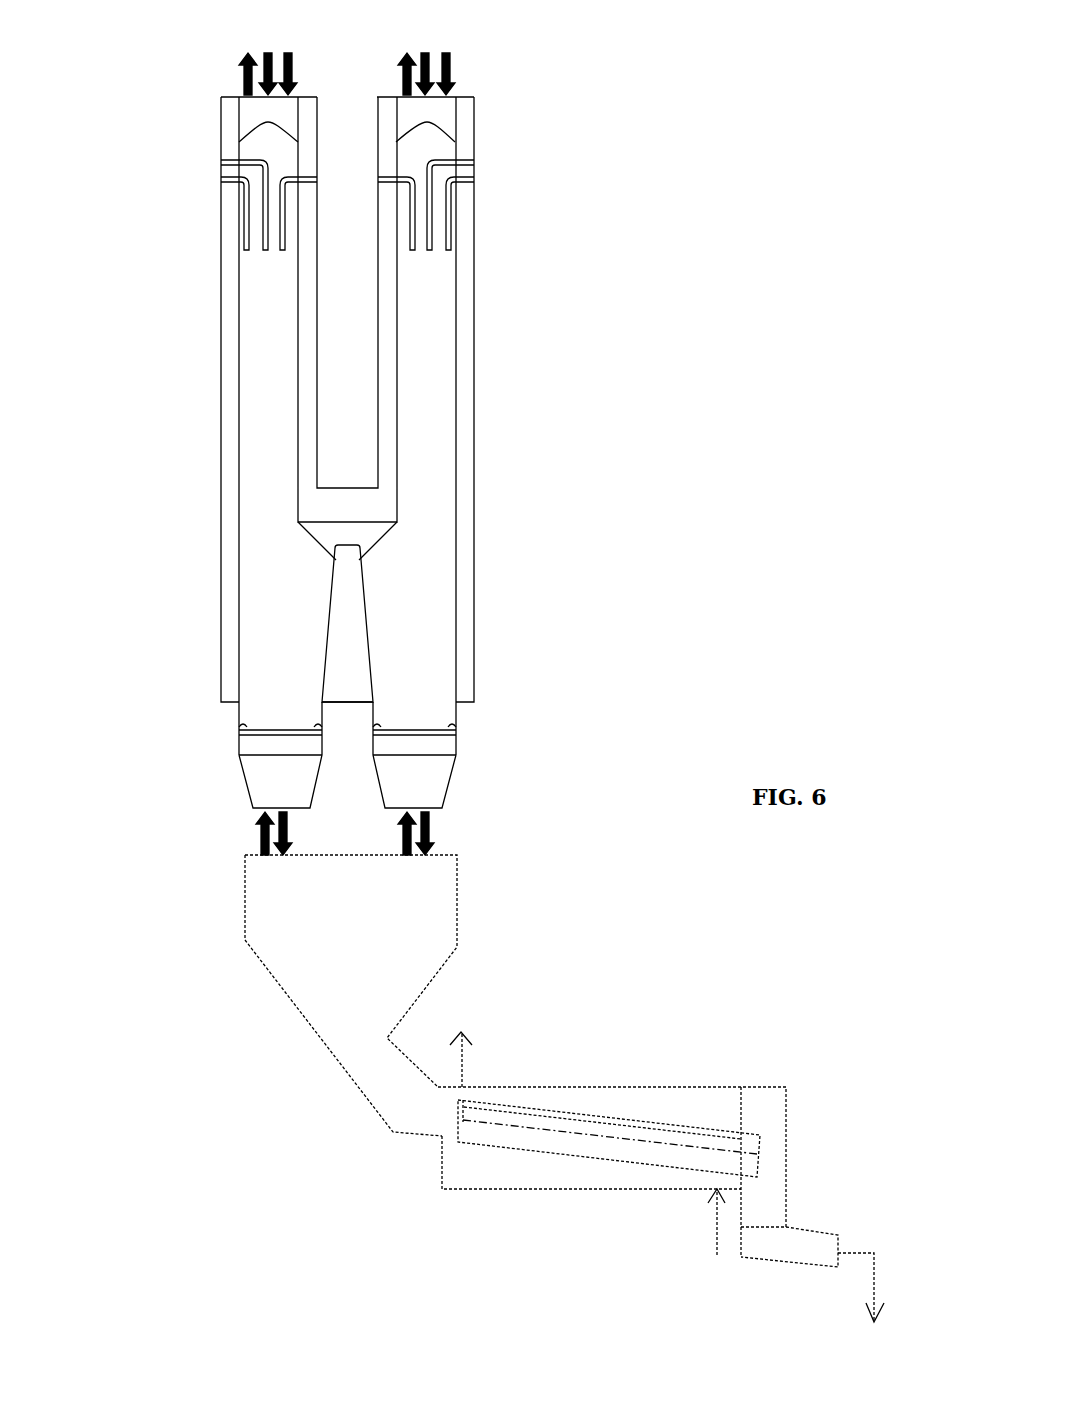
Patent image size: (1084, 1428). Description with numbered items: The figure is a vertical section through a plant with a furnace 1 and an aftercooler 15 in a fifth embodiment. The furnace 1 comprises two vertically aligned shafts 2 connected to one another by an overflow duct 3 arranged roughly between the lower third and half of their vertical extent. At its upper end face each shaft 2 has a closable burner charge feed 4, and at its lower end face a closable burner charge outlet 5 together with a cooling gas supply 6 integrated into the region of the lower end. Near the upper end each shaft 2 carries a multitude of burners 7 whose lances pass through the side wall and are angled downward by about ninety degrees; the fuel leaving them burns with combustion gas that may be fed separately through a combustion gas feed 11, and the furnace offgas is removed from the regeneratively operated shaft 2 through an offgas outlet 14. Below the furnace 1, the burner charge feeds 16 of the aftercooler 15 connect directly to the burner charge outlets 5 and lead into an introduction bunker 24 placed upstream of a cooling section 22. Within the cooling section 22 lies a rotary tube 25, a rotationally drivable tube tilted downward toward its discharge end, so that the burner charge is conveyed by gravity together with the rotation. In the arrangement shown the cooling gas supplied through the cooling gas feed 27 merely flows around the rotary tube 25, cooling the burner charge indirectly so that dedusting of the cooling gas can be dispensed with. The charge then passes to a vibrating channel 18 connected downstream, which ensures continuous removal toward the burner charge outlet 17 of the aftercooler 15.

The furnace 1 is at (172, 113).
The shaft 2 is at (377, 90).
The overflow duct 3 is at (355, 531).
The burner charge feed 4 is at (346, 58).
The burner charge outlet 5 is at (379, 833).
The cooling gas supply 6 is at (328, 833).
The burners 7 is at (283, 195).
The combustion gas feed 11 is at (376, 58).
The offgas outlet 14 is at (320, 58).
The aftercooler 15 is at (589, 1182).
The burner charge feeds 16 is at (379, 833).
The burner charge outlet 17 is at (880, 1287).
The vibrating channel 18 is at (783, 1262).
The cooling section 22 is at (493, 1188).
The introduction bunker 24 is at (281, 989).
The rotary tube 25 is at (610, 1138).
The cooling gas feed 27 is at (706, 1222).